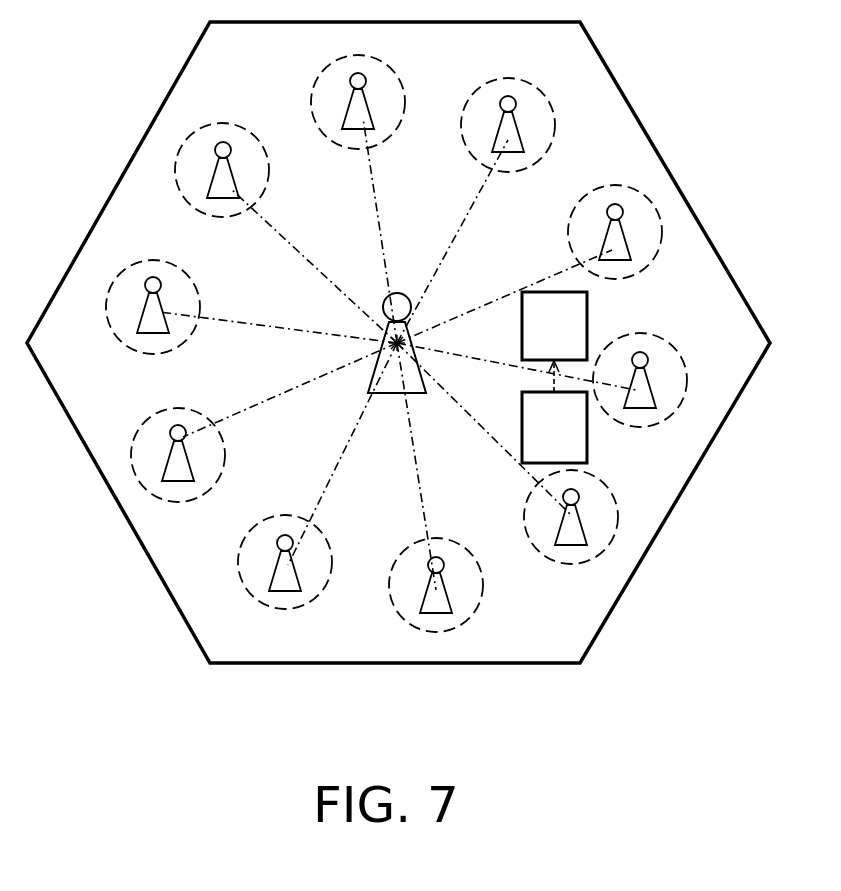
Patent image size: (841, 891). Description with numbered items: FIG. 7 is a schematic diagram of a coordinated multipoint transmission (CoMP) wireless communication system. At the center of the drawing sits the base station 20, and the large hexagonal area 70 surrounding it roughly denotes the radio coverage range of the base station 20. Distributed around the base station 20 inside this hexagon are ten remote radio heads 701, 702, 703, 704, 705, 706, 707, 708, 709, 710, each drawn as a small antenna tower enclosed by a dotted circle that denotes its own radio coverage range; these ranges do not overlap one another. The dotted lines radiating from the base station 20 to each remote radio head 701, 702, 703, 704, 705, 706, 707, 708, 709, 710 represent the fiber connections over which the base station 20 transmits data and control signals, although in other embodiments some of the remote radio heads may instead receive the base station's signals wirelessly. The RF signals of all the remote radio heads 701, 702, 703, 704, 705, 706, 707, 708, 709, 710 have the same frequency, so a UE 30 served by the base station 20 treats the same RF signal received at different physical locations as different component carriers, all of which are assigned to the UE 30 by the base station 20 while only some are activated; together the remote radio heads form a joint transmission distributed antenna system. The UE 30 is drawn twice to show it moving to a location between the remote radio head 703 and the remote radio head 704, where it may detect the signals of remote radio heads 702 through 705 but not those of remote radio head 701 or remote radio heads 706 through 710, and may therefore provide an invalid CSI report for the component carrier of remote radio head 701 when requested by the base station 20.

The cell 70 is at (698, 707).
The base station 20 is at (403, 292).
The UE 30 is at (522, 346).
The remote radio head 701 is at (508, 95).
The remote radio head 702 is at (615, 203).
The remote radio head 703 is at (640, 352).
The remote radio head 704 is at (580, 493).
The remote radio head 705 is at (446, 592).
The remote radio head 706 is at (286, 593).
The remote radio head 707 is at (192, 468).
The remote radio head 708 is at (153, 266).
The remote radio head 709 is at (223, 141).
The remote radio head 710 is at (359, 72).